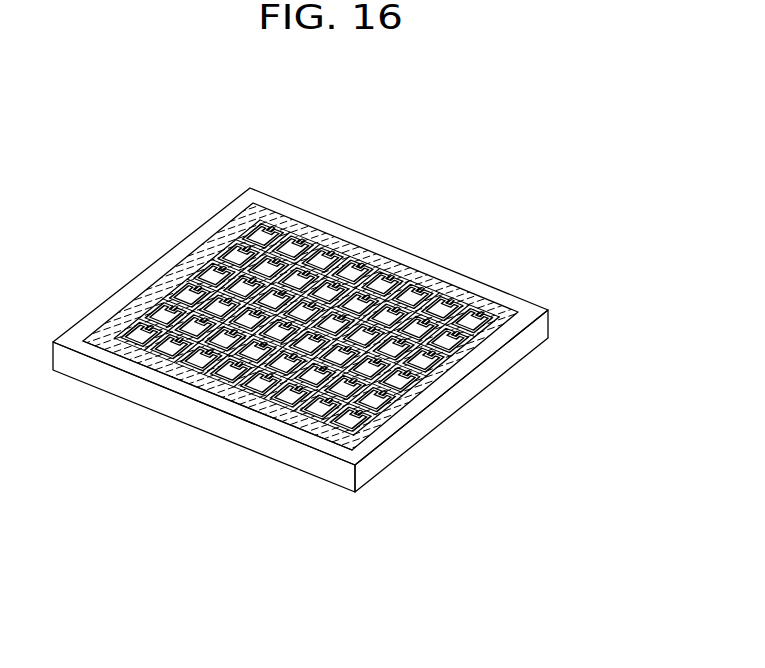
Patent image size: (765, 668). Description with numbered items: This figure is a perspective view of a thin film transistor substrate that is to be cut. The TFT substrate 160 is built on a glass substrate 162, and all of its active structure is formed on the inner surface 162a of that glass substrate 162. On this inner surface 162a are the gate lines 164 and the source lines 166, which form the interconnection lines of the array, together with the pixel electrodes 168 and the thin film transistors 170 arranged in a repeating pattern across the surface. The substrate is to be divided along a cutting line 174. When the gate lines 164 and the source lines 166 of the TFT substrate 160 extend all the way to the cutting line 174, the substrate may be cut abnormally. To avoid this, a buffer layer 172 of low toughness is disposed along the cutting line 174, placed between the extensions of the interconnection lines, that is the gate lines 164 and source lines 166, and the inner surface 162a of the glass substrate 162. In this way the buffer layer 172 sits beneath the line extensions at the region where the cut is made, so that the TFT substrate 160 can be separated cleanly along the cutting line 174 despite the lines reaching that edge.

The TFT substrate 160 is at (508, 176).
The glass substrate 162 is at (538, 333).
The inner surface 162a is at (530, 310).
The gate lines 164 is at (407, 378).
The source lines 166 is at (432, 277).
The pixel electrodes 168 is at (340, 253).
The thin film transistors 170 is at (368, 270).
The buffer layer 172 is at (213, 390).
The cutting line 174 is at (130, 358).